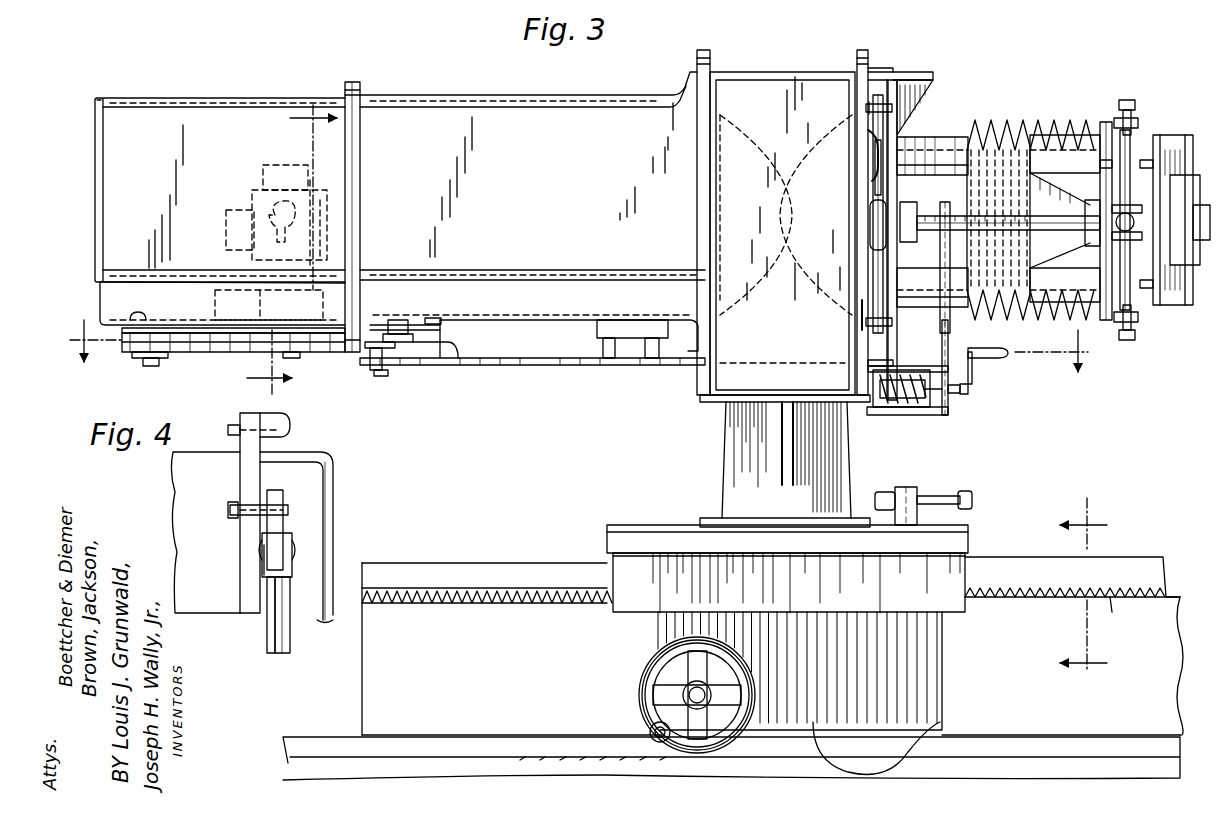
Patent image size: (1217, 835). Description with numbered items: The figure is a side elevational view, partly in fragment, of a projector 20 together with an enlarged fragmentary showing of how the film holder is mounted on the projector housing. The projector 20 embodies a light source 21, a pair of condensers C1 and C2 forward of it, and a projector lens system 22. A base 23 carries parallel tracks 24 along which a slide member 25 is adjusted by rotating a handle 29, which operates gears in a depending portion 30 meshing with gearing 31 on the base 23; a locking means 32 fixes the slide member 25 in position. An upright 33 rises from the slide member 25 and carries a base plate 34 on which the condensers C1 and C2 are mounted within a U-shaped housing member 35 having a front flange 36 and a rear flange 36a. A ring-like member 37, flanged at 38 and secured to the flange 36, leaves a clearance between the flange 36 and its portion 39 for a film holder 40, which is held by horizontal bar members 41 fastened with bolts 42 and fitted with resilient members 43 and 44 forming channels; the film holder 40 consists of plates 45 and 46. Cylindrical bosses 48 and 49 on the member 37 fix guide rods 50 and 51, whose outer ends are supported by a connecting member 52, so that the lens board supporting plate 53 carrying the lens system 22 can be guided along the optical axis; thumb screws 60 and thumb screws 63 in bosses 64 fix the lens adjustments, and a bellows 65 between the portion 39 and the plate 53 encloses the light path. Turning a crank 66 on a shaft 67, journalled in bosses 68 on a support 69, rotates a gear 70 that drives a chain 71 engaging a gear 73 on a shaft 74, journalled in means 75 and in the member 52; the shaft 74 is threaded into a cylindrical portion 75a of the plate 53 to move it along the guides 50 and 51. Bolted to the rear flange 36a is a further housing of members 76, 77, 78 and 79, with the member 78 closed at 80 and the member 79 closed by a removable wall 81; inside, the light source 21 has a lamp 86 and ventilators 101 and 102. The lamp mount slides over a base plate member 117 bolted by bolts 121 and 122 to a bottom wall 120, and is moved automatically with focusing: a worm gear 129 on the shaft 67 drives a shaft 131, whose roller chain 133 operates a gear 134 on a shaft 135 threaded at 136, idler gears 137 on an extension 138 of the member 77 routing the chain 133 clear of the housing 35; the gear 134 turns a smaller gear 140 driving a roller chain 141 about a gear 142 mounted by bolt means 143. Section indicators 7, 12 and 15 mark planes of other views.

In FIG. 3, the section line 7- 7 is at (284, 246).
In FIG. 3, the section line 12- 12 is at (579, 346).
In FIG. 3, the section line 15- 15 is at (1083, 595).
In FIG. 3, the projector 20 is at (437, 77).
In FIG. 3, the light source 21 is at (240, 180).
In FIG. 3, the projector lens system 22 is at (1132, 195).
In FIG. 3, the base 23 is at (355, 703).
In FIG. 3, the tracks 24 is at (1135, 557).
In FIG. 3, the slide member 25 is at (955, 612).
In FIG. 3, the handle 29 is at (635, 693).
In FIG. 3, the depending portion 30 is at (920, 680).
In FIG. 3, the gearing 31 is at (1121, 616).
In FIG. 3, the locking means 32 is at (940, 501).
In FIG. 3, the upright 33 is at (735, 475).
In FIG. 3, the base plate 34 is at (706, 402).
In FIG. 3, the U-shaped housing member 35 is at (770, 72).
In FIG. 4, the U-shaped housing member 35 is at (200, 452).
In FIG. 3, the front flange 36 is at (861, 50).
In FIG. 4, the front flange 36 is at (240, 414).
In FIG. 3, the rear flange 36a is at (703, 50).
In FIG. 3, the ring-like member 37 is at (900, 72).
In FIG. 4, the ring-like member 37 is at (318, 452).
In FIG. 3, the flange 38 is at (876, 64).
In FIG. 4, the flange 38 is at (272, 413).
In FIG. 3, the portion of ring-like member 39 is at (905, 92).
In FIG. 4, the portion of ring-like member 39 is at (333, 505).
In FIG. 3, the film holder 40 is at (860, 298).
In FIG. 4, the film holder 40 is at (295, 638).
In FIG. 3, the bar members 41 is at (883, 100).
In FIG. 4, the bar members 41 is at (275, 493).
In FIG. 3, the bolts 42 is at (892, 110).
In FIG. 4, the bolts 42 is at (233, 516).
In FIG. 3, the resilient member 43 is at (875, 178).
In FIG. 4, the resilient member 43 is at (292, 560).
In FIG. 3, the resilient member 44 is at (873, 147).
In FIG. 4, the resilient member 44 is at (262, 580).
In FIG. 4, the plate 45 is at (267, 637).
In FIG. 4, the plate 46 is at (290, 625).
In FIG. 3, the cylindrical boss 48 is at (975, 135).
In FIG. 3, the cylindrical boss 49 is at (950, 318).
In FIG. 3, the guide rod 50 is at (1033, 150).
In FIG. 3, the guide rod 51 is at (1022, 310).
In FIG. 3, the connecting member 52 is at (1190, 135).
In FIG. 3, the lens board supporting plate 53 is at (1102, 135).
In FIG. 3, the thumb screws 60 is at (1150, 202).
In FIG. 3, the thumb screws 63 is at (1127, 100).
In FIG. 3, the bosses 64 is at (1136, 118).
In FIG. 3, the bellows 65 is at (1010, 132).
In FIG. 3, the crank 66 is at (1000, 358).
In FIG. 3, the shaft 67 is at (975, 394).
In FIG. 3, the bosses 68 is at (880, 408).
In FIG. 3, the support 69 is at (937, 416).
In FIG. 3, the gear 70 is at (950, 409).
In FIG. 3, the chain 71 is at (940, 260).
In FIG. 3, the gear 73 is at (950, 176).
In FIG. 3, the shaft 74 is at (1045, 163).
In FIG. 3, the journalling means 75 is at (908, 202).
In FIG. 3, the cylindrical portion 75a is at (1060, 287).
In FIG. 3, the housing member 76 is at (550, 191).
In FIG. 3, the housing member 77 is at (553, 309).
In FIG. 3, the housing member 78 is at (128, 305).
In FIG. 3, the housing member 79 is at (166, 192).
In FIG. 3, the closure 80 is at (98, 290).
In FIG. 3, the removable wall 81 is at (95, 170).
In FIG. 3, the lamp 86 is at (352, 196).
In FIG. 3, the ventilator 101 is at (276, 165).
In FIG. 3, the ventilator 102 is at (226, 220).
In FIG. 3, the base plate member 117 is at (330, 352).
In FIG. 3, the bottom wall 120 is at (488, 322).
In FIG. 3, the bolt 121 is at (435, 318).
In FIG. 3, the bolt 122 is at (140, 314).
In FIG. 3, the worm gear 129 is at (900, 408).
In FIG. 3, the shaft 131 is at (868, 370).
In FIG. 3, the roller chain 133 is at (540, 366).
In FIG. 3, the gear 134 is at (392, 376).
In FIG. 3, the shaft 135 is at (445, 324).
In FIG. 3, the threaded connection 136 is at (396, 320).
In FIG. 3, the idler gears 137 is at (650, 368).
In FIG. 3, the extension 138 is at (633, 325).
In FIG. 3, the gear 140 is at (440, 358).
In FIG. 3, the roller chain 141 is at (225, 352).
In FIG. 3, the gear 142 is at (135, 354).
In FIG. 3, the bolt means 143 is at (152, 366).
In FIG. 3, the condenser C1 is at (756, 207).
In FIG. 3, the condenser C2 is at (816, 207).